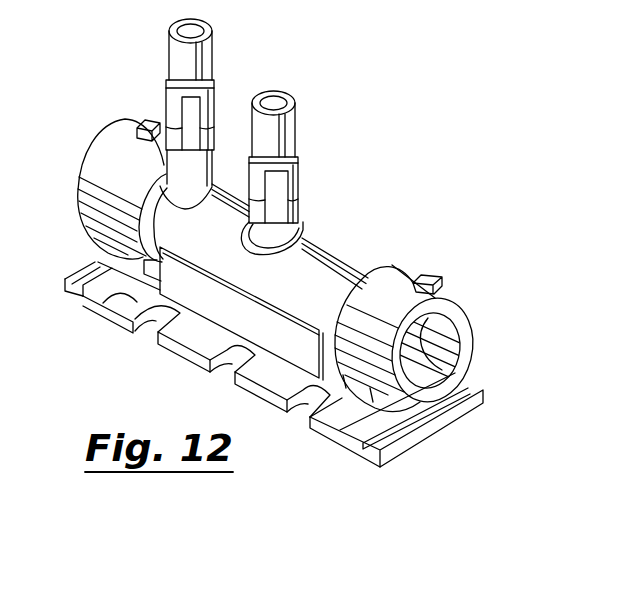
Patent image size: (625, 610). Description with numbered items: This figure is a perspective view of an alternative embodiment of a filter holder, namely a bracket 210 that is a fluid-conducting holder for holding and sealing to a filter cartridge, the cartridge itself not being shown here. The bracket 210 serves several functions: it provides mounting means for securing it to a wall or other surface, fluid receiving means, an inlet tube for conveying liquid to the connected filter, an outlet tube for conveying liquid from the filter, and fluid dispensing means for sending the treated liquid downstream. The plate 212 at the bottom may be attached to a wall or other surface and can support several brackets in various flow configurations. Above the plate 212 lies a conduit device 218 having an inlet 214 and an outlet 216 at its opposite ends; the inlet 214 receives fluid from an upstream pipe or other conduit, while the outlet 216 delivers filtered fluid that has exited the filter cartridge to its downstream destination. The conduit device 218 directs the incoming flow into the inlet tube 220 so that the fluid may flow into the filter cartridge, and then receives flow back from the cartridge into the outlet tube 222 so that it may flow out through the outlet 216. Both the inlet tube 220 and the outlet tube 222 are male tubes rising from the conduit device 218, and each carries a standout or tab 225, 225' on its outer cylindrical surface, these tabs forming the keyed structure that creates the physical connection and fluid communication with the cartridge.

The bracket 210 is at (125, 388).
The plate 212 is at (110, 297).
The inlet 214 is at (428, 332).
The outlet 216 is at (136, 187).
The conduit device 218 is at (315, 233).
The inlet tube 220 is at (290, 133).
The outlet tube 222 is at (212, 61).
The tab 225 is at (313, 187).
The tab 225' is at (145, 111).